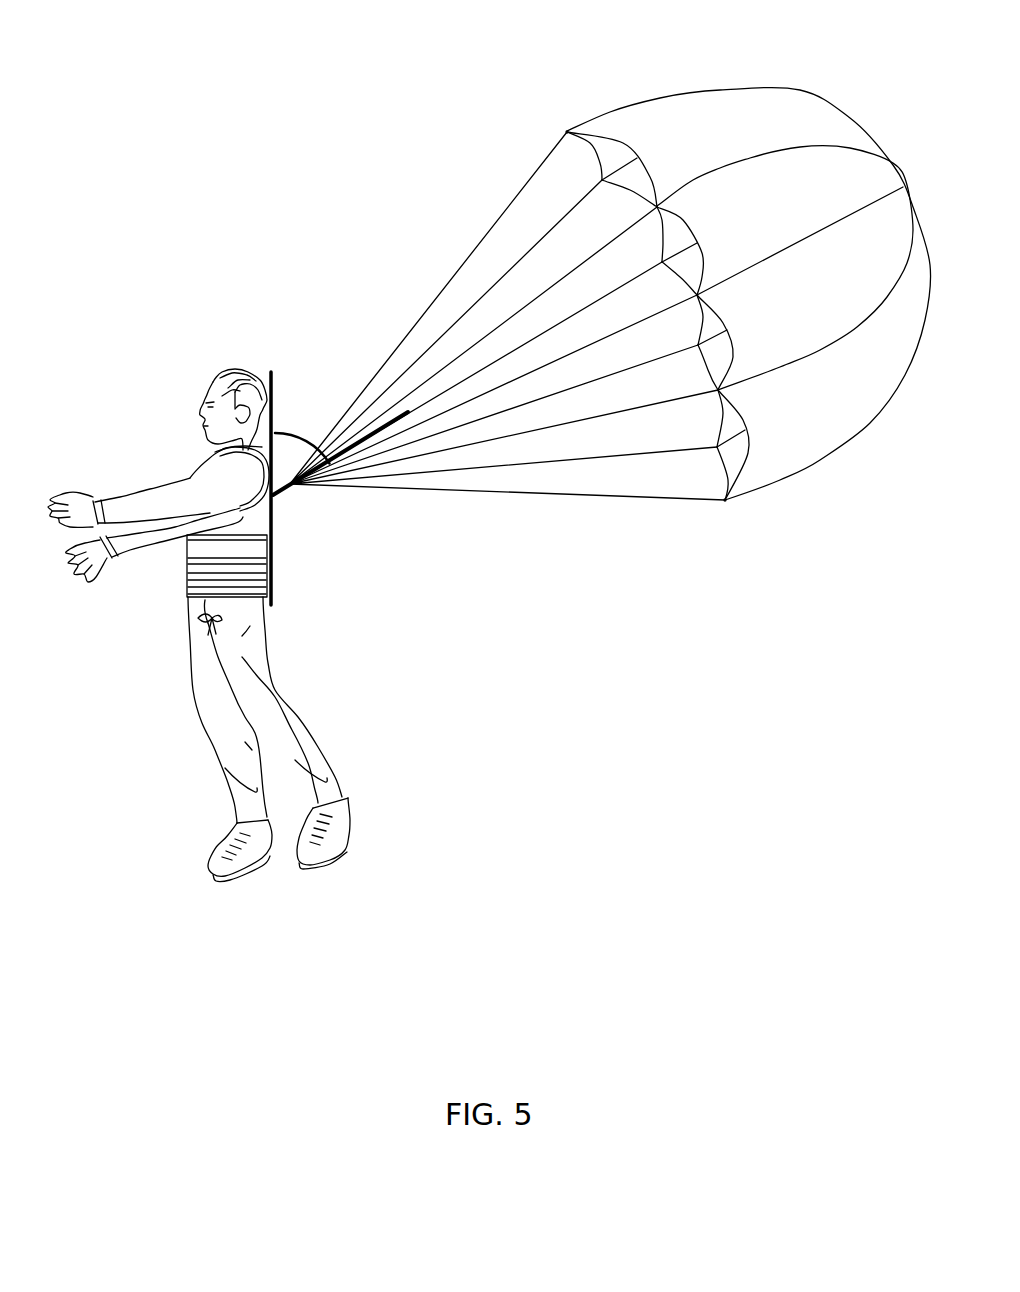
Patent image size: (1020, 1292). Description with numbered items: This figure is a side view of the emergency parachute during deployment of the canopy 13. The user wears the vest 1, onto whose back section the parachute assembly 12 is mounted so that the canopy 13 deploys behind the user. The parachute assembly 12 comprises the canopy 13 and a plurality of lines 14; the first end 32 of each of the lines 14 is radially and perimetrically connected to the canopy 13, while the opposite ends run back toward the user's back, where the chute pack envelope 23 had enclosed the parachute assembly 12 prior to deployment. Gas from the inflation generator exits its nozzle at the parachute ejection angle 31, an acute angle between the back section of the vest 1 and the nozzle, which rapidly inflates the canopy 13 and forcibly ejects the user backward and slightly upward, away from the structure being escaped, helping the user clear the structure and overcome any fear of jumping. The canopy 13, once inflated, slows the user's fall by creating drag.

The vest 1 is at (157, 580).
The parachute assembly 12 is at (411, 56).
The canopy 13 is at (834, 115).
The plurality of lines 14 is at (430, 259).
The chute pack envelope 23 is at (294, 522).
The parachute ejection angle 31 is at (311, 431).
The first end 32 is at (567, 132).